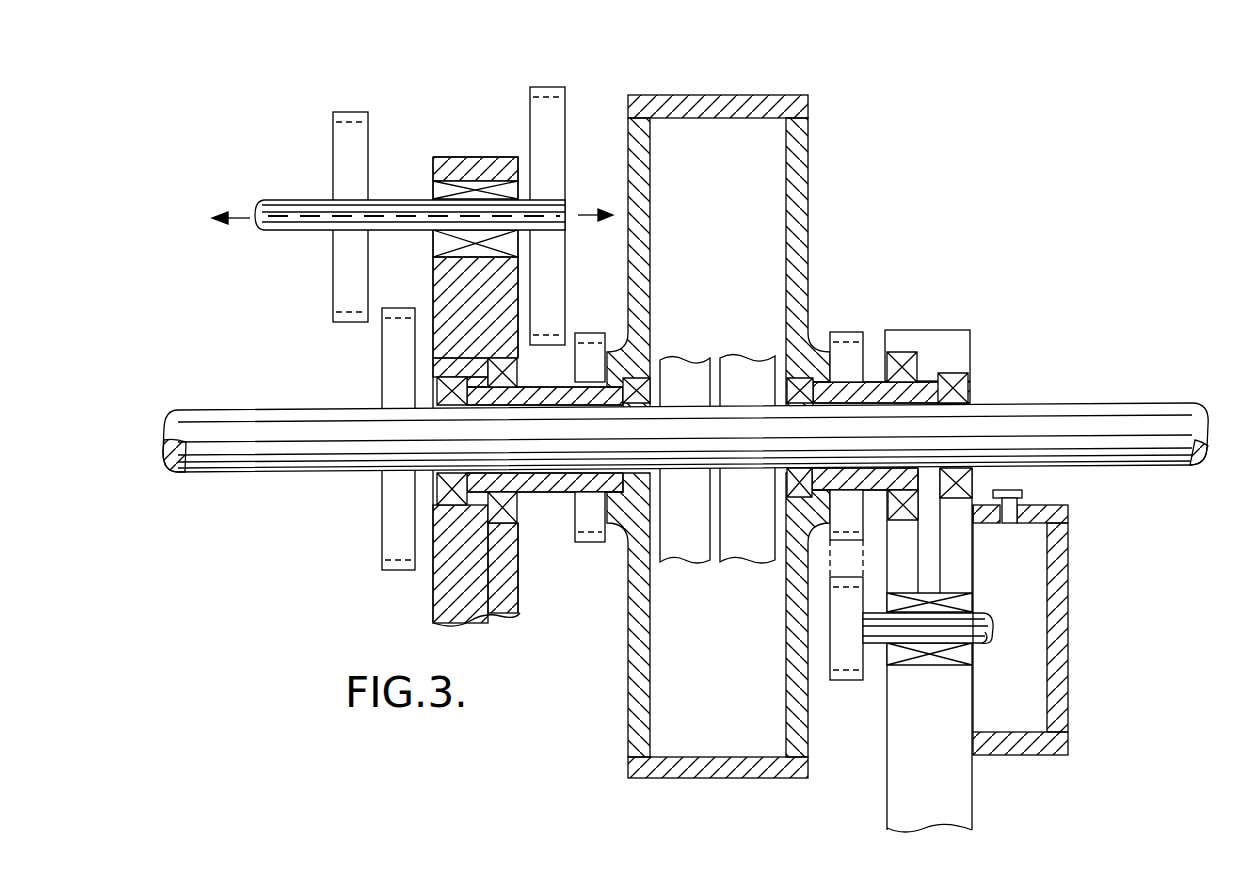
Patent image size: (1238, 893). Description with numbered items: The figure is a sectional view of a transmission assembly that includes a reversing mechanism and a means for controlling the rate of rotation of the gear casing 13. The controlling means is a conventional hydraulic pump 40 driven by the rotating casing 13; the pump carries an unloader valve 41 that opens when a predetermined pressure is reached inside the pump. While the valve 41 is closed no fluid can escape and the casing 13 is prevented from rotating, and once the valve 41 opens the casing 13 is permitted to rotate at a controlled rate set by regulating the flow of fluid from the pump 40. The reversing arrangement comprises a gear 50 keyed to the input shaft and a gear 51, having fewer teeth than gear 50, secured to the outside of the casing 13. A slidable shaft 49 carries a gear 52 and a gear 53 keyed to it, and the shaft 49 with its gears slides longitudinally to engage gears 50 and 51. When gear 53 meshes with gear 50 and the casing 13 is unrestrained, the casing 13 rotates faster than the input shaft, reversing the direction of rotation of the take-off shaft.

The casing 13 is at (795, 207).
The hydraulic pump 40 is at (1057, 597).
The unloader valve 41 is at (1022, 495).
The slidable shaft 49 is at (405, 202).
The gear 50 is at (398, 355).
The gear 51 is at (590, 350).
The gear 52 is at (545, 125).
The gear 53 is at (345, 143).